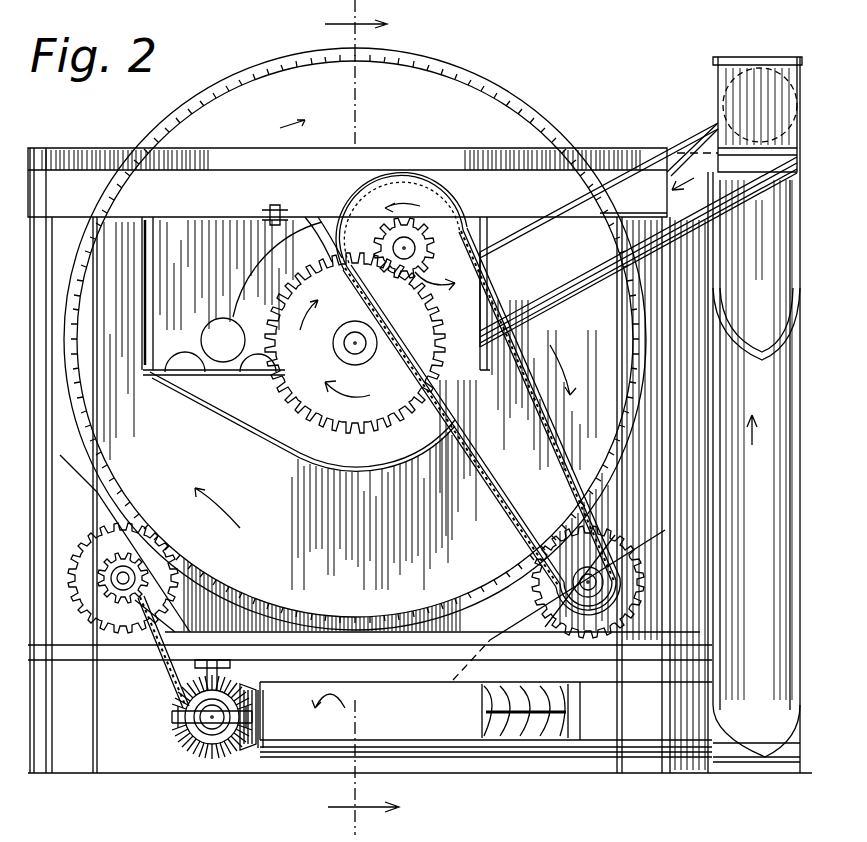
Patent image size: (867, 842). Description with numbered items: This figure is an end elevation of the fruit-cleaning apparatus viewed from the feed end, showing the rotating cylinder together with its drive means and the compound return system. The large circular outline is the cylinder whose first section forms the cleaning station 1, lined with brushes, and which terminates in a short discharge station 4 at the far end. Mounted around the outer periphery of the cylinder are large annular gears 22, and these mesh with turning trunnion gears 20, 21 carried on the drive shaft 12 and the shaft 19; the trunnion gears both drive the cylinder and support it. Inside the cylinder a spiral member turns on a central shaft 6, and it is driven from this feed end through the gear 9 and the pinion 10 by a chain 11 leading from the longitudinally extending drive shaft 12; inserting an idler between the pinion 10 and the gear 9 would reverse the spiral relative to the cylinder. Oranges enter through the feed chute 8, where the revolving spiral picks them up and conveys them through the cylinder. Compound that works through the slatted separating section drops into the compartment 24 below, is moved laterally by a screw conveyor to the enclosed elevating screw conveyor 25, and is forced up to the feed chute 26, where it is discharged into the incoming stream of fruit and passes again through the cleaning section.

The cleaning station 1 is at (600, 102).
The annular gears 22 is at (246, 80).
The central shaft 6 is at (350, 338).
The feed chute 8 is at (232, 405).
The gear 9 is at (355, 343).
The pinion 10 is at (410, 242).
The chain 11 is at (538, 405).
The drive shaft 12 is at (588, 597).
The shaft 19 is at (132, 583).
The trunnion gear 20 is at (123, 578).
The trunnion gear 21 is at (590, 528).
The compartment 24 is at (420, 711).
The elevating screw conveyor 25 is at (754, 415).
The feed chute 26 is at (638, 235).
The discharge station 4 is at (363, 817).